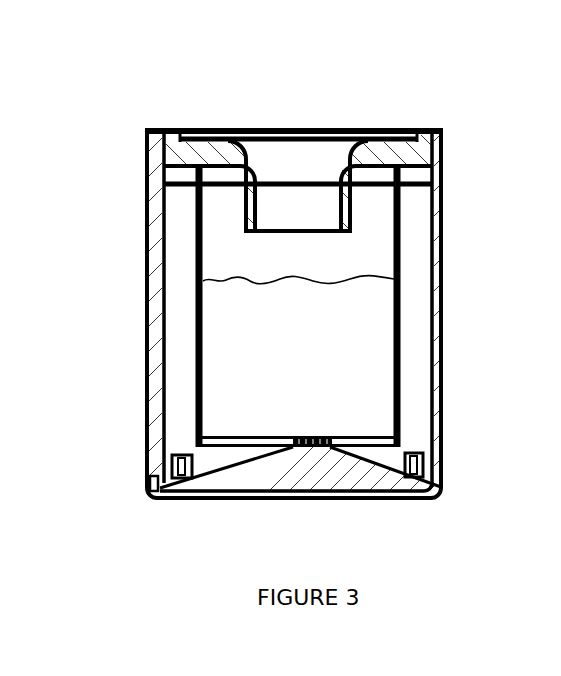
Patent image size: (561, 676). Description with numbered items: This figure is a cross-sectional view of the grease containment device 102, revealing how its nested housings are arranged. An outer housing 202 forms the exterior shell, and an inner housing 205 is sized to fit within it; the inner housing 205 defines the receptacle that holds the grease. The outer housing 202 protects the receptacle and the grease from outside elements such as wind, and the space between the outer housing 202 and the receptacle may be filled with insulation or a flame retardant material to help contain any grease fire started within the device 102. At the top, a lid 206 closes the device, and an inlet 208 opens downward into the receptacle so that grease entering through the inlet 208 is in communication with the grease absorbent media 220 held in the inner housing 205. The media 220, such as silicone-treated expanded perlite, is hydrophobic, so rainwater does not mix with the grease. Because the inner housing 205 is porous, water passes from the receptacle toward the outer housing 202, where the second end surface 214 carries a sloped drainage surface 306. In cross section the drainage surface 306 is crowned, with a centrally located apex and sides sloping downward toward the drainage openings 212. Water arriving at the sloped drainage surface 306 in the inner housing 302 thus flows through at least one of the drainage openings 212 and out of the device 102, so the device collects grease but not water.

The grease containment device 102 is at (443, 312).
The outer housing 202 is at (147, 355).
The inner housing 205 is at (192, 302).
The lid 206 is at (227, 134).
The inlet 208 is at (258, 205).
The drainage openings 212 is at (425, 464).
The second end surface 214 is at (397, 497).
The grease absorbent media 220 is at (313, 278).
The inner housing 302 is at (192, 402).
The sloped drainage surface 306 is at (224, 468).